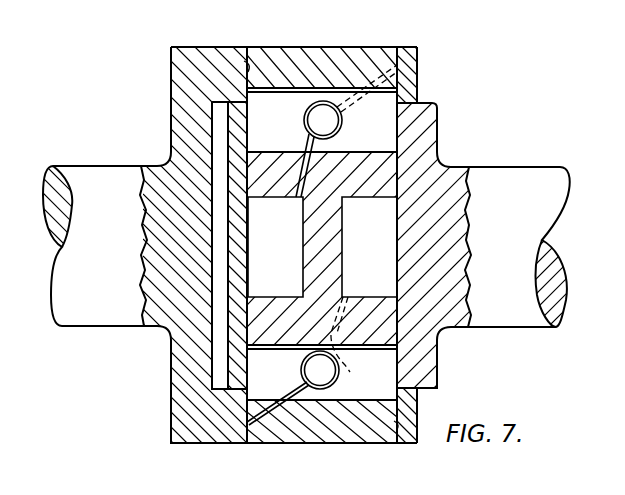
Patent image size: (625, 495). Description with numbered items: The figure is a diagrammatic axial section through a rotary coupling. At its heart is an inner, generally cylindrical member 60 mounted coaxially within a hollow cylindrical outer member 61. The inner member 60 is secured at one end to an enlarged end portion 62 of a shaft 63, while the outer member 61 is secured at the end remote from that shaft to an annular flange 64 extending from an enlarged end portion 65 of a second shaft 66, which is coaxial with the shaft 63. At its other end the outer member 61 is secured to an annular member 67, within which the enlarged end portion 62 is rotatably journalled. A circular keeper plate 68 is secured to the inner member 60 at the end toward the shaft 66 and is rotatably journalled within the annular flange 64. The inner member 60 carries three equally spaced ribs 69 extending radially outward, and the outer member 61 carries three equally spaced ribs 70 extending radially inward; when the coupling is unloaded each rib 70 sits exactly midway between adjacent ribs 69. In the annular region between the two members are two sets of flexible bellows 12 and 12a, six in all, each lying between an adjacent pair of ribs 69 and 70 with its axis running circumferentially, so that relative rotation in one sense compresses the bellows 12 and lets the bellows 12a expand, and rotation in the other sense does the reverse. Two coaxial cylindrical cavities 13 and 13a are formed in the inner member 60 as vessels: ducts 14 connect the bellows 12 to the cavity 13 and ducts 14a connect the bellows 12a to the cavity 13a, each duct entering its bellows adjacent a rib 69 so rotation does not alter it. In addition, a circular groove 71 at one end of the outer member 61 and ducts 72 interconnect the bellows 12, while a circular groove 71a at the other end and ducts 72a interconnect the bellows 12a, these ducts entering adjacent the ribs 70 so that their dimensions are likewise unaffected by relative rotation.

The flexible bellows 12 is at (324, 101).
The flexible bellows 12a is at (324, 389).
The cylindrical cavity 13 is at (278, 253).
The cylindrical cavity 13a is at (375, 255).
The duct 14 is at (306, 173).
The duct 14a is at (354, 340).
The inner member 60 is at (267, 320).
The outer member 61 is at (350, 62).
The enlarged end portion 62 is at (420, 126).
The shaft 63 is at (521, 256).
The annular flange 64 is at (233, 57).
The enlarged end portion 65 is at (180, 84).
The shaft 66 is at (110, 250).
The annular member 67 is at (415, 65).
The keeper plate 68 is at (235, 135).
The rib 69 is at (287, 130).
The rib 70 is at (280, 383).
The circular groove 71 is at (397, 430).
The circular groove 71a is at (247, 66).
The duct 72 is at (386, 77).
The duct 72a is at (274, 405).